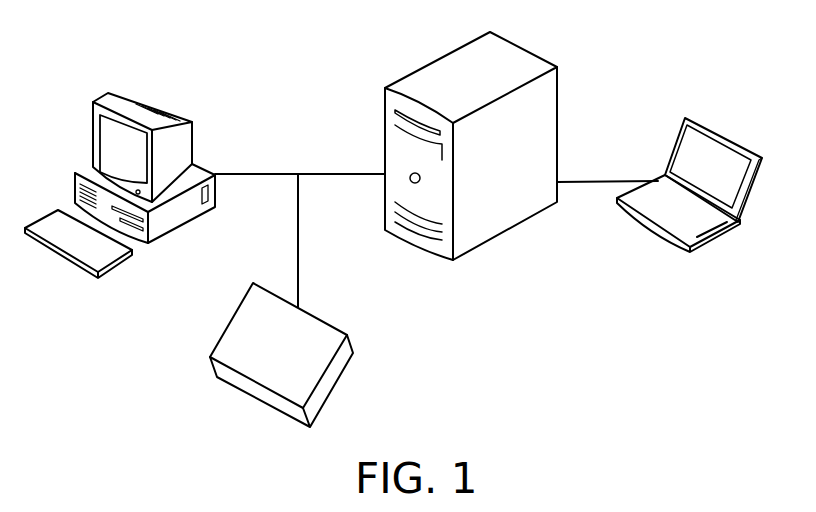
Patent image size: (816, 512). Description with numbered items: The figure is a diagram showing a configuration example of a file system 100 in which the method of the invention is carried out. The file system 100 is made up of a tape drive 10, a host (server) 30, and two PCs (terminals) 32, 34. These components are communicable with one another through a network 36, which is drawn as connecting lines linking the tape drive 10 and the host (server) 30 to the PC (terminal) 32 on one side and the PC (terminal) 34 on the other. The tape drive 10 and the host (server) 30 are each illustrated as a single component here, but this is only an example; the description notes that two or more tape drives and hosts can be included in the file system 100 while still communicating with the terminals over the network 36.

The file system 100 is at (337, 28).
The tape drive 10 is at (298, 357).
The host (server) 30 is at (533, 52).
The PC (terminal) 32 is at (160, 102).
The PC (terminal) 34 is at (723, 137).
The network 36 is at (299, 252).